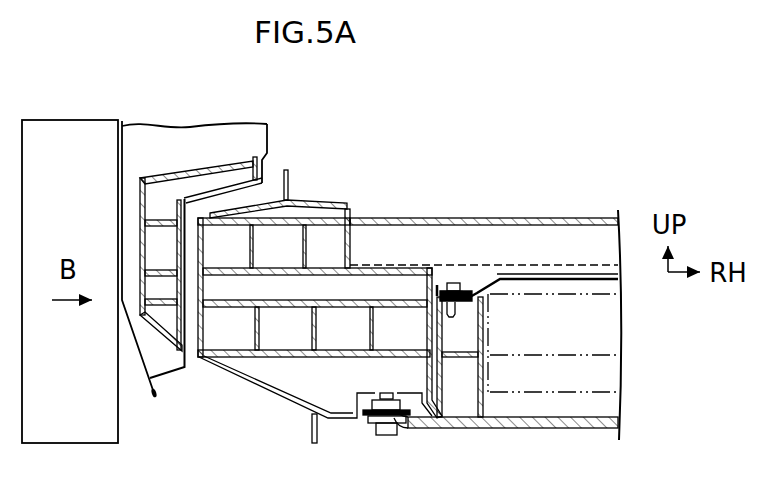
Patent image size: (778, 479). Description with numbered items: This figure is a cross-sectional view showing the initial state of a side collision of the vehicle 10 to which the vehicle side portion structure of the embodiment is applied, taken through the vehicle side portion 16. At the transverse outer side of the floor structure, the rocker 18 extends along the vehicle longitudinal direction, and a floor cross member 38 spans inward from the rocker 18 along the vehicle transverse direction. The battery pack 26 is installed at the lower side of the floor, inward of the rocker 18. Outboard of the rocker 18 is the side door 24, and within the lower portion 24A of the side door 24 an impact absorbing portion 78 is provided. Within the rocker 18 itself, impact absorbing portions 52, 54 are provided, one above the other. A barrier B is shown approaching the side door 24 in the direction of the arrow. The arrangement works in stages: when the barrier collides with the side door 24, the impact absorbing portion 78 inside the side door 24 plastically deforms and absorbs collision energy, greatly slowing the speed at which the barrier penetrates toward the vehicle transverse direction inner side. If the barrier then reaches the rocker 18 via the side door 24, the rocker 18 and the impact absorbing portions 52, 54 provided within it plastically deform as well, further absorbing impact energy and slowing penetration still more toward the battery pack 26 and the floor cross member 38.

The vehicle 10 is at (599, 190).
The vehicle side portion 16 is at (158, 117).
The rocker 18 is at (279, 398).
The side door 24 is at (408, 276).
The lower portion of the side door 24A is at (408, 276).
The battery pack 26 is at (623, 335).
The floor cross member 38 is at (502, 219).
The impact absorbing portion 52 is at (328, 214).
The impact absorbing portion 54 is at (341, 359).
The impact absorbing portion 78 is at (139, 208).